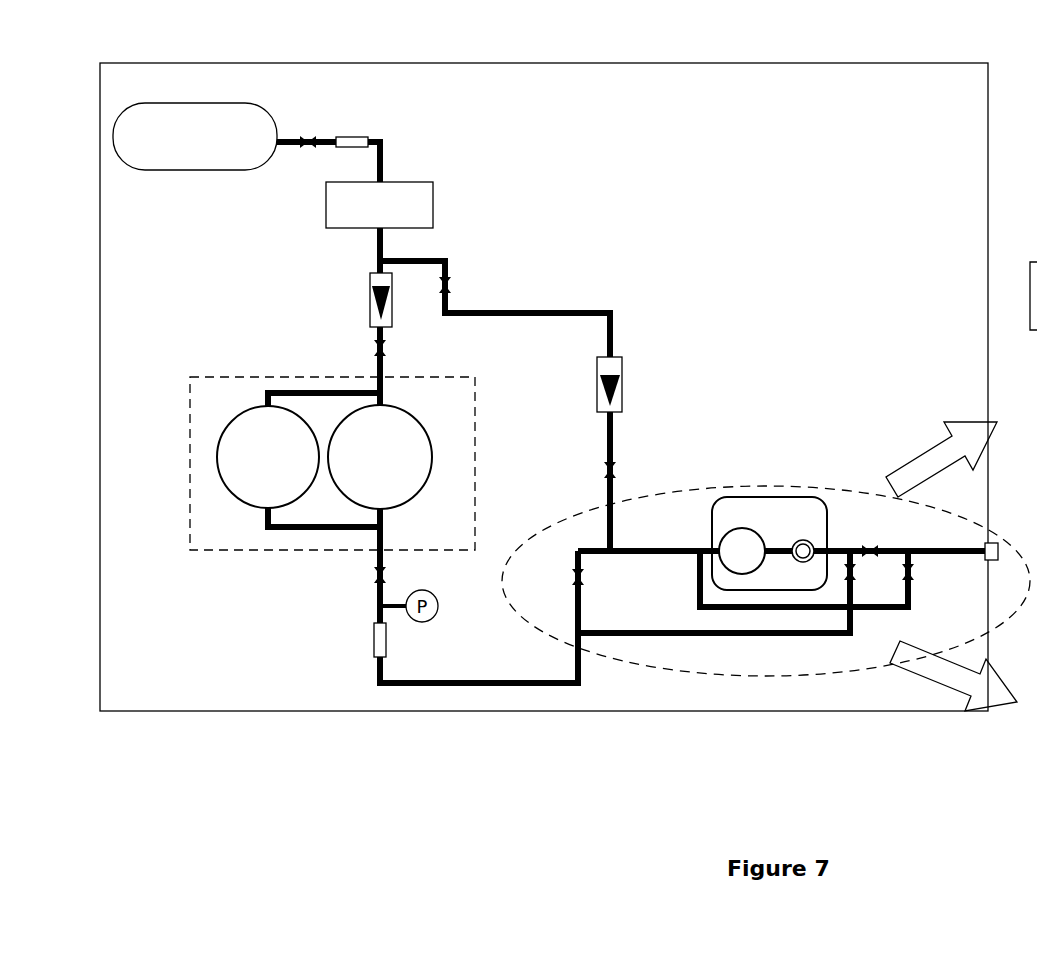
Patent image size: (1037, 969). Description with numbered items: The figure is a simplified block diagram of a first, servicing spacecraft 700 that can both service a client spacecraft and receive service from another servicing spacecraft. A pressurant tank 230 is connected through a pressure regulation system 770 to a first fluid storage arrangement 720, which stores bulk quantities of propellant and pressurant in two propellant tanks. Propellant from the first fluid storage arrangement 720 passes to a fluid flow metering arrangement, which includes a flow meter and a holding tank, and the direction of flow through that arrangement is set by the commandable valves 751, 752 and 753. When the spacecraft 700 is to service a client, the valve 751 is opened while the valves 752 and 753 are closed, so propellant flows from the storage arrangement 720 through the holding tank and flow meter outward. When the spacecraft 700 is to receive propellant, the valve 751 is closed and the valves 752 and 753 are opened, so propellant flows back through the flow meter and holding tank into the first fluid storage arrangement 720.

The first spacecraft 700 is at (209, 42).
The pressurant tank 230 is at (182, 172).
The pressure regulation system 770 is at (436, 203).
The first fluid storage arrangement 720 is at (214, 378).
The commandable valve 751 is at (870, 545).
The commandable valve 752 is at (855, 580).
The commandable valve 753 is at (913, 572).